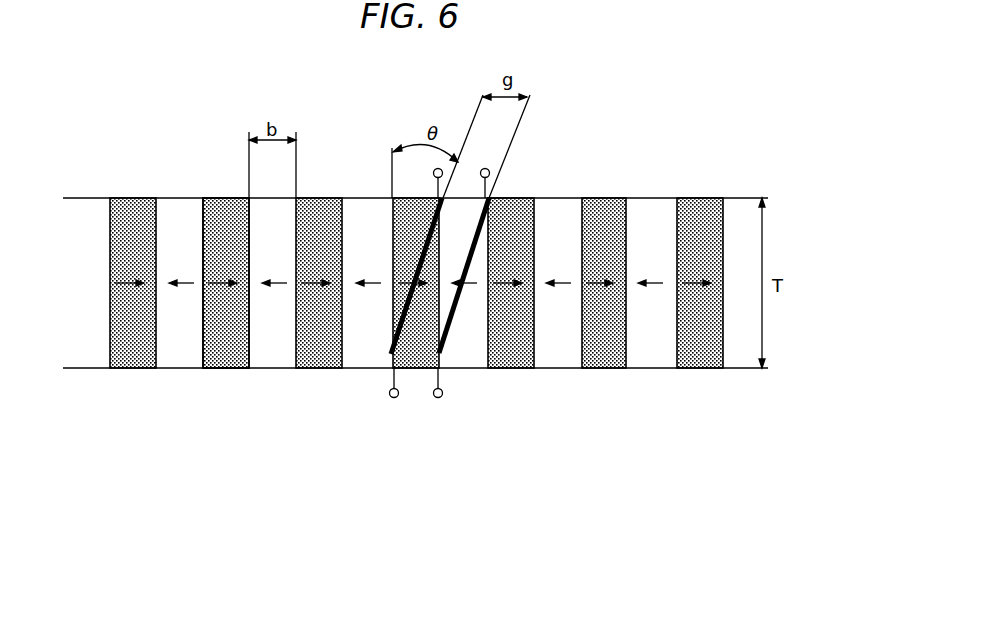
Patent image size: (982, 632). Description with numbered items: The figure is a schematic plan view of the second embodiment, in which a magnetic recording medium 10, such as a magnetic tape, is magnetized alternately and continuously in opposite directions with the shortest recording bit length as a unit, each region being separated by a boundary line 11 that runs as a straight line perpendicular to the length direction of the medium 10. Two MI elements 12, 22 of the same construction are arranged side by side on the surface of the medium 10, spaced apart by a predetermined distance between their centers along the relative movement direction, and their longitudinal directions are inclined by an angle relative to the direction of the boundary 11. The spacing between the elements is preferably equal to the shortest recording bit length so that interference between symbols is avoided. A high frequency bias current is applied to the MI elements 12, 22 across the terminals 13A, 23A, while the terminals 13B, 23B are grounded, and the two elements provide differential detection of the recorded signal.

The magnetic recording medium 10 is at (128, 208).
The boundary line 11 is at (203, 322).
The MI element 12 is at (418, 268).
The terminal 13A is at (433, 173).
The terminal 13B is at (391, 397).
The MI element 22 is at (463, 276).
The terminal 23A is at (490, 172).
The terminal 23B is at (443, 394).